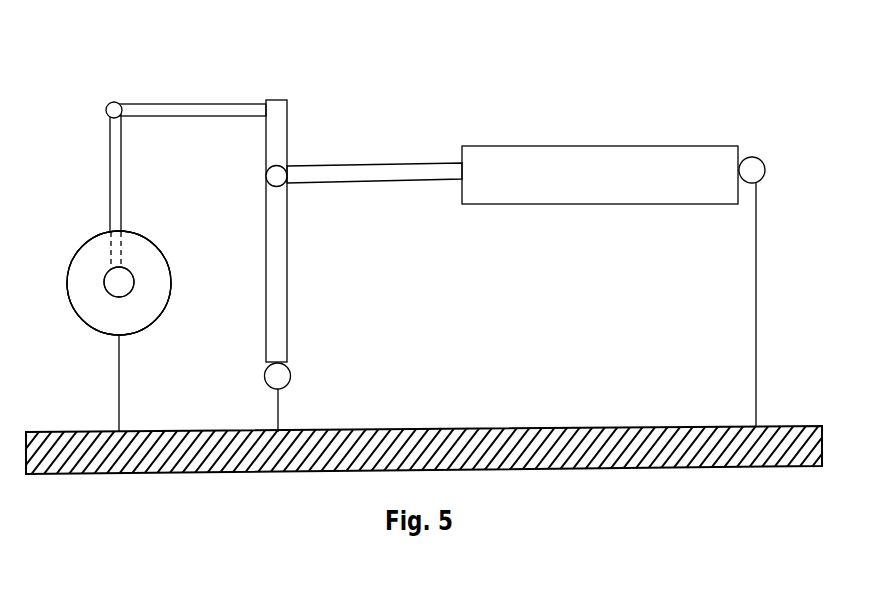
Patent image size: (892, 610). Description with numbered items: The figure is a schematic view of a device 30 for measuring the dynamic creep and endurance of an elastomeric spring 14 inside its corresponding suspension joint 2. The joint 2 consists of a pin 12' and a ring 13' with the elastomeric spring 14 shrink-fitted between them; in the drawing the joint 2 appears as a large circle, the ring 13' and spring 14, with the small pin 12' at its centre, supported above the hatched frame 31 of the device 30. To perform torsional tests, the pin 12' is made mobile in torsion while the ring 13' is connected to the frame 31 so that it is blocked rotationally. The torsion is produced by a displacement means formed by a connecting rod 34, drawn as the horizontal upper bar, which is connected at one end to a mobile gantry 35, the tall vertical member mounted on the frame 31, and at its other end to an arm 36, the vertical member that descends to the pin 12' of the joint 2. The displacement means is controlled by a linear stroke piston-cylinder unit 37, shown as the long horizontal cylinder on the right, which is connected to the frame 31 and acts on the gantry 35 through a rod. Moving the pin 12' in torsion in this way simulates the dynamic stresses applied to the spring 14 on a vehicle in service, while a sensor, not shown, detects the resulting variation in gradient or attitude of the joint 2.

The suspension joint 2 is at (73, 322).
The pin 12' is at (136, 281).
The ring 13' is at (137, 268).
The elastomeric spring 14 is at (145, 307).
The device 30 is at (526, 224).
The frame 31 is at (548, 425).
The connecting rod 34 is at (225, 103).
The mobile gantry 35 is at (288, 308).
The arm 36 is at (110, 168).
The linear stroke piston-cylinder unit 37 is at (587, 142).